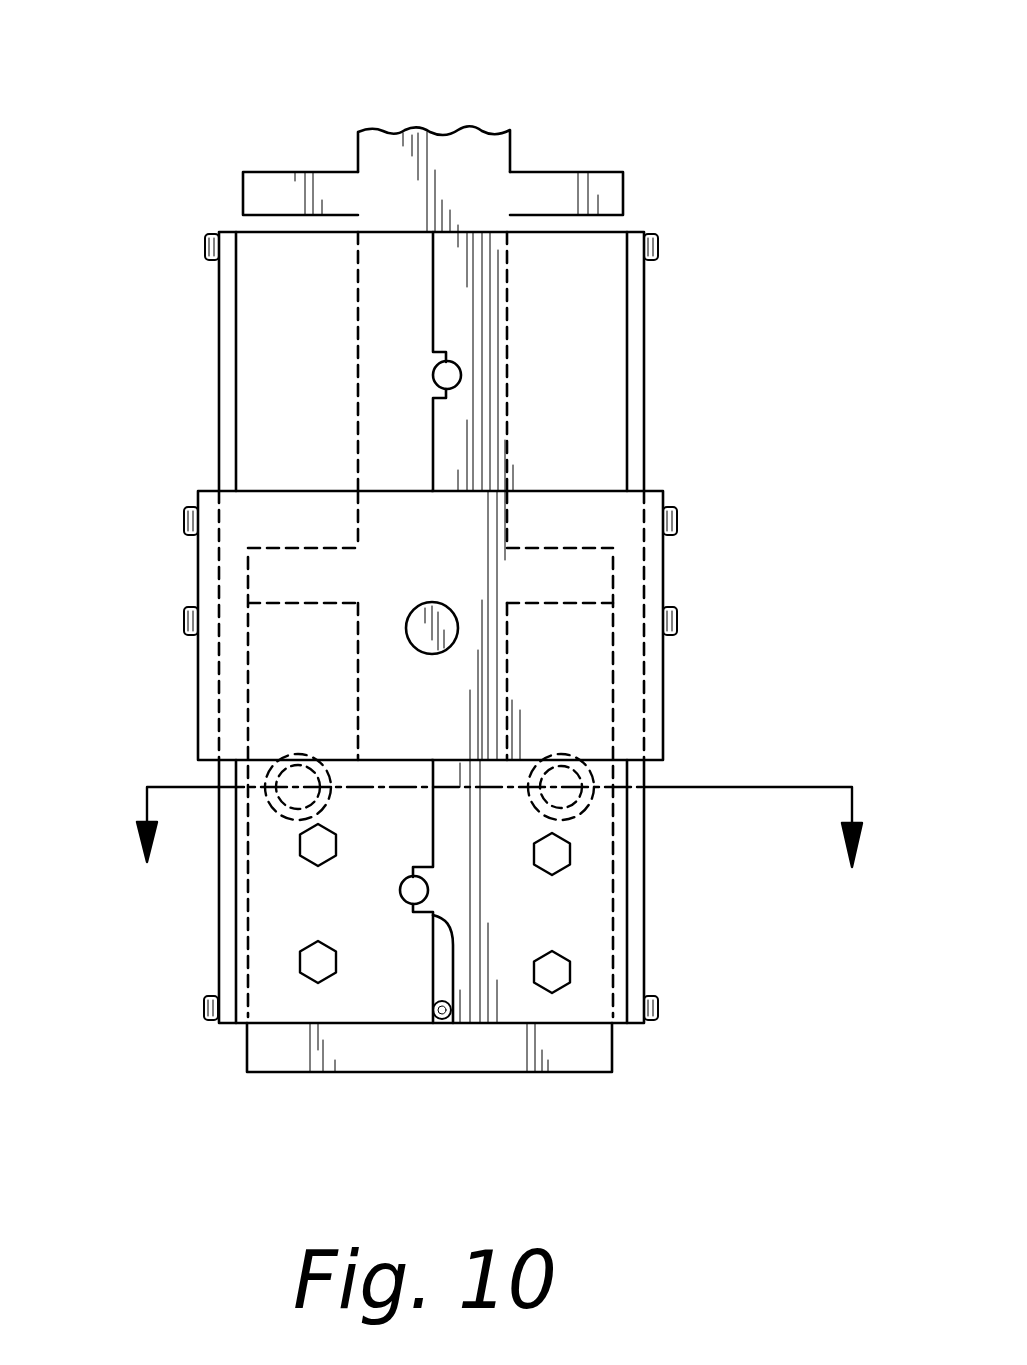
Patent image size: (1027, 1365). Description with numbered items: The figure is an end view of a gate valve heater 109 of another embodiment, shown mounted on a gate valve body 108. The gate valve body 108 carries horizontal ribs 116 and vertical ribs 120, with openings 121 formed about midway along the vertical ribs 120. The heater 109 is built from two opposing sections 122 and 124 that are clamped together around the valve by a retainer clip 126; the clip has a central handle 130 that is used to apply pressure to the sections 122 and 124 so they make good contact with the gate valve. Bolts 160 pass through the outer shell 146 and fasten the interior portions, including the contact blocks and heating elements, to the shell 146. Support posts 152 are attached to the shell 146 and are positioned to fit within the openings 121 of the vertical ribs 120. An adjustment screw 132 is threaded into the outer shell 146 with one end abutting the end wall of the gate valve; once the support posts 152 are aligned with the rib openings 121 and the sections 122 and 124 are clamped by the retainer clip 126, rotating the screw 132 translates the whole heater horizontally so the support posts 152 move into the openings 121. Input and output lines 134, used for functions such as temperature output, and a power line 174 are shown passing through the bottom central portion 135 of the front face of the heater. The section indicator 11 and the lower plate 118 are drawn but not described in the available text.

The gate valve heater 109 is at (207, 212).
The gate valve body 108 is at (458, 145).
The section 122 is at (612, 262).
The section 124 is at (280, 302).
The outer shell 146 is at (645, 300).
The adjustment screw 132 is at (433, 375).
The retainer clip 126 is at (285, 492).
The vertical rib 120 is at (582, 690).
The horizontal rib 116 is at (558, 562).
The central handle 130 is at (410, 650).
The bolt 160 is at (660, 247).
The opening 121 is at (262, 770).
The support post 152 is at (297, 822).
The section line 11- 11 is at (501, 854).
The input and output line 134 is at (573, 840).
The bottom central portion 135 is at (438, 970).
The power line 174 is at (442, 1020).
The base plate 118 is at (258, 1045).